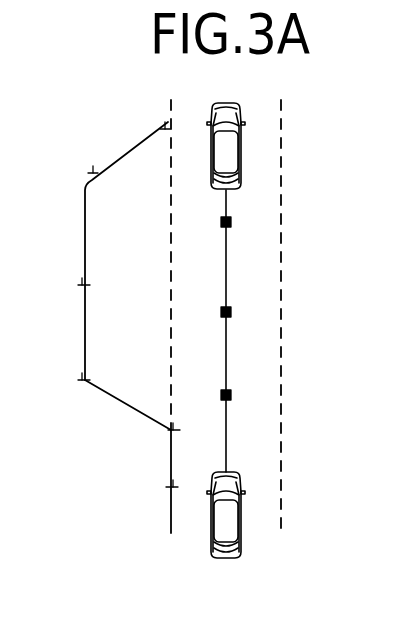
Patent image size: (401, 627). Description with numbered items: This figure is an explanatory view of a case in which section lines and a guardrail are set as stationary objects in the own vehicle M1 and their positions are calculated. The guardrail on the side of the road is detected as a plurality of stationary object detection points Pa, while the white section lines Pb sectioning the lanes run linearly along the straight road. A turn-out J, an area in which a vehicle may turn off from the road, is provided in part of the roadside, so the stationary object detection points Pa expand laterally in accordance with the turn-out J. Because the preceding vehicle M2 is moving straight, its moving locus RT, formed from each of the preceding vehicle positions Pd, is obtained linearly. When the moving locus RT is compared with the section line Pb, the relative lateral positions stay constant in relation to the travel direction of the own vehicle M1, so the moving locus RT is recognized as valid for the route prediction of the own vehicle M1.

The stationary object detection point Pa is at (93, 172).
The section line Pb is at (283, 199).
The preceding vehicle position Pd is at (231, 395).
The moving locus RT is at (226, 268).
The turn-out J is at (135, 388).
The own vehicle M1 is at (242, 518).
The preceding vehicle M2 is at (243, 137).